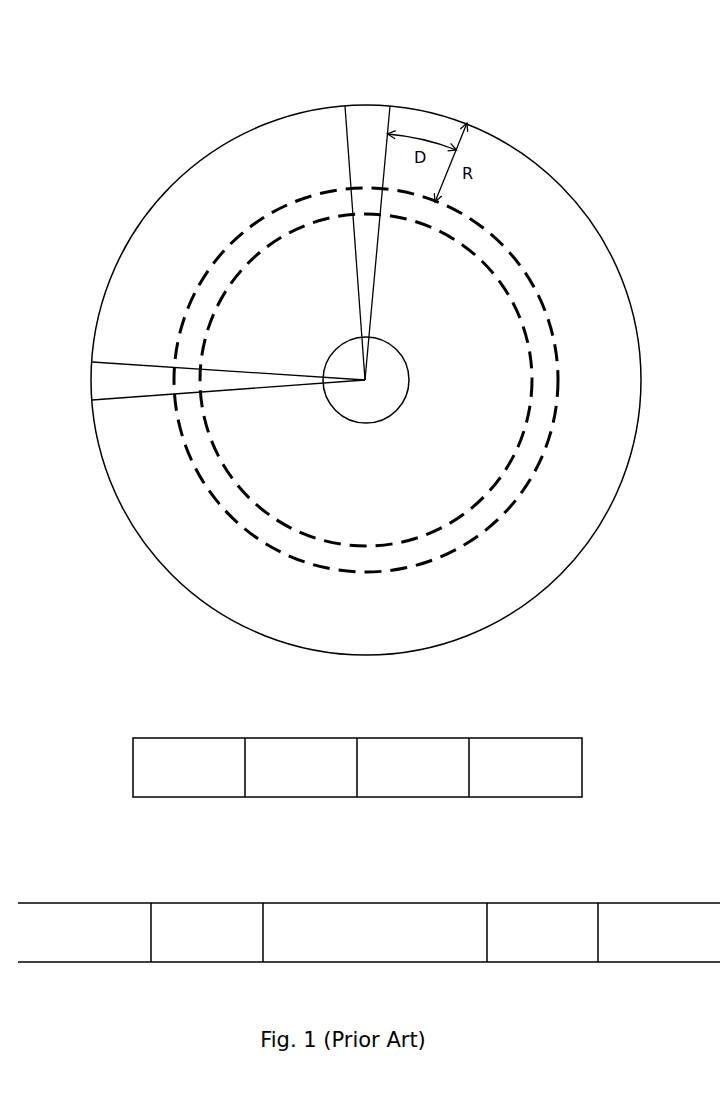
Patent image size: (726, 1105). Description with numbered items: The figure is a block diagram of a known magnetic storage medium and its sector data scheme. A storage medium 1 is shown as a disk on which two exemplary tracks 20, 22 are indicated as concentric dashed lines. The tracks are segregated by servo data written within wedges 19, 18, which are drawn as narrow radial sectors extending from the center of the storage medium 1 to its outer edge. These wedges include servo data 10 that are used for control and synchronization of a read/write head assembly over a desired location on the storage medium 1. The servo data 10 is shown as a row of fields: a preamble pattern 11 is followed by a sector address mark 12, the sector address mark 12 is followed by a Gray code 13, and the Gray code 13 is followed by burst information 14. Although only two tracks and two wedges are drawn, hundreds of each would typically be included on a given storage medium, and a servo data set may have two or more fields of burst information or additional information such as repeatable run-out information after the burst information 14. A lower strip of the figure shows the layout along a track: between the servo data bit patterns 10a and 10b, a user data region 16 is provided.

The storage medium 1 is at (98, 78).
The wedge 18 is at (367, 108).
The wedge 19 is at (97, 383).
The track 20 is at (500, 280).
The track 22 is at (492, 233).
The servo data 10 is at (357, 737).
The preamble pattern 11 is at (197, 767).
The sector address mark 12 is at (319, 767).
The Gray code 13 is at (418, 767).
The burst information 14 is at (525, 773).
The servo data bit pattern 10a is at (207, 932).
The servo data bit pattern 10b is at (547, 932).
The user data region 16 is at (410, 932).